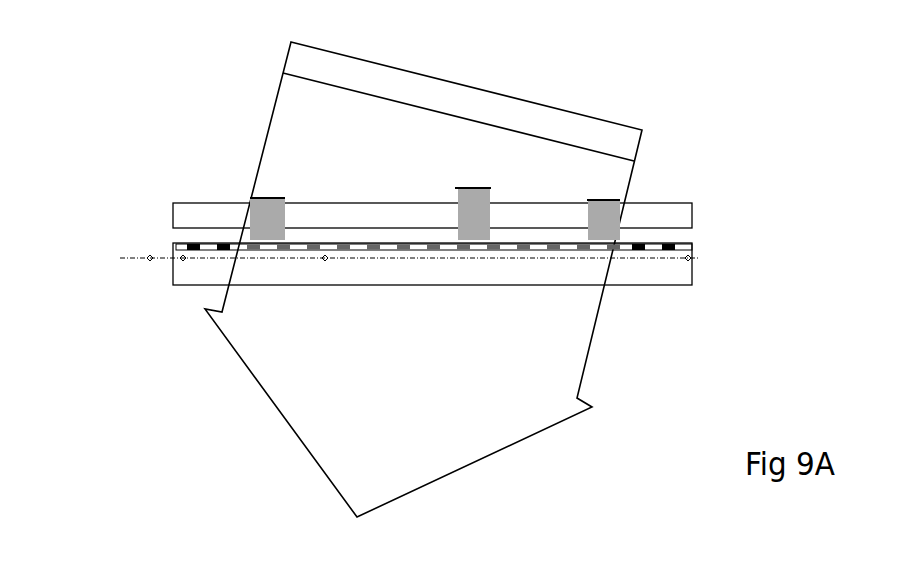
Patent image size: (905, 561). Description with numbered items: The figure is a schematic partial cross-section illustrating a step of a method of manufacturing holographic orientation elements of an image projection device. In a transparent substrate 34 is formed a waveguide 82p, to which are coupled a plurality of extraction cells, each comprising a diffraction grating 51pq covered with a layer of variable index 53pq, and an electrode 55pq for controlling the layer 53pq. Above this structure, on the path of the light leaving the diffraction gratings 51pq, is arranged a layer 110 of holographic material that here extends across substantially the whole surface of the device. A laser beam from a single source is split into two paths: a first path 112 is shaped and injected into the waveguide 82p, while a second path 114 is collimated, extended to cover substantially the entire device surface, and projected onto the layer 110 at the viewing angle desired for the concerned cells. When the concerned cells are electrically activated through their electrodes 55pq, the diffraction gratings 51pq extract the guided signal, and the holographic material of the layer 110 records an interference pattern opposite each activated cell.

The layer of holographic material 110 is at (192, 210).
The first path 112 is at (132, 258).
The second path 114 is at (550, 142).
The waveguide 82p is at (690, 252).
The transparent substrate 34 is at (667, 278).
The electrode 55pq is at (268, 247).
The diffraction grating 51pq is at (280, 247).
The layer of variable index 53pq is at (332, 312).